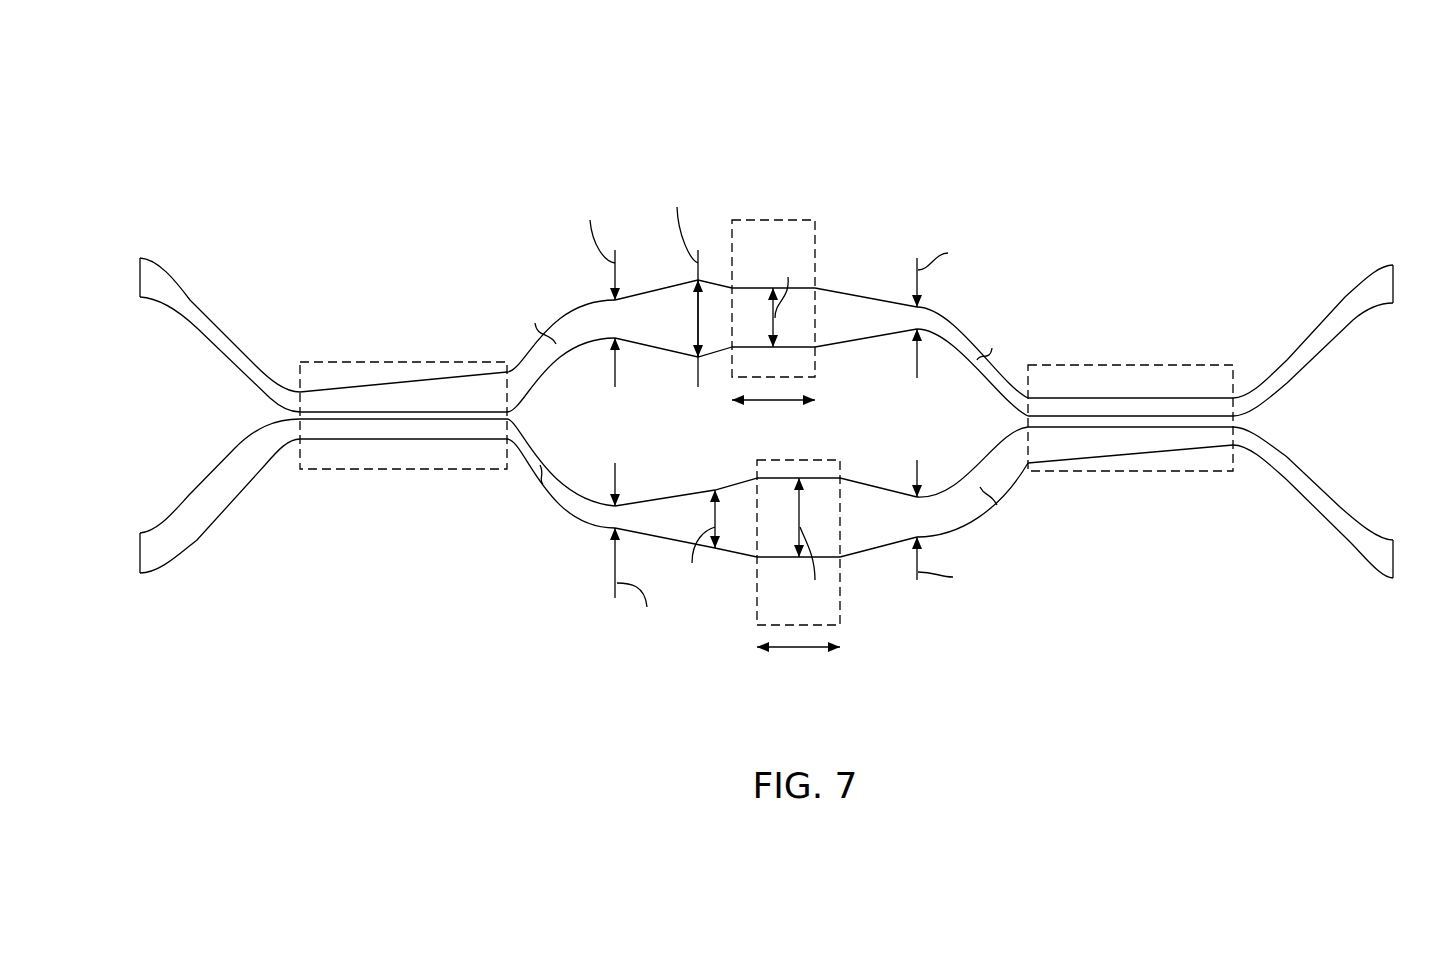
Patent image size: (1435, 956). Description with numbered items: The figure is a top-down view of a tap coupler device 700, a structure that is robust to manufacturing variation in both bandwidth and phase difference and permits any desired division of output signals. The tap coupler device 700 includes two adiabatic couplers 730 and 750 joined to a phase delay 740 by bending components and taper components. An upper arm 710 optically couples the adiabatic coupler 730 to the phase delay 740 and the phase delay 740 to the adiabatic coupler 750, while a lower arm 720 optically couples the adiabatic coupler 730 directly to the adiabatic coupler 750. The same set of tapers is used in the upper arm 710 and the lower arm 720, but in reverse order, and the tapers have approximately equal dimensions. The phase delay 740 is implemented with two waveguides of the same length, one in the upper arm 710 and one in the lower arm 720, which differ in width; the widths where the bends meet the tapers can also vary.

The tap coupler device 700 is at (278, 115).
The upper arm 710 is at (532, 255).
The lower arm 720 is at (572, 557).
The adiabatic coupler 730 is at (403, 362).
The phase delay 740 is at (773, 220).
The adiabatic coupler 750 is at (1130, 365).